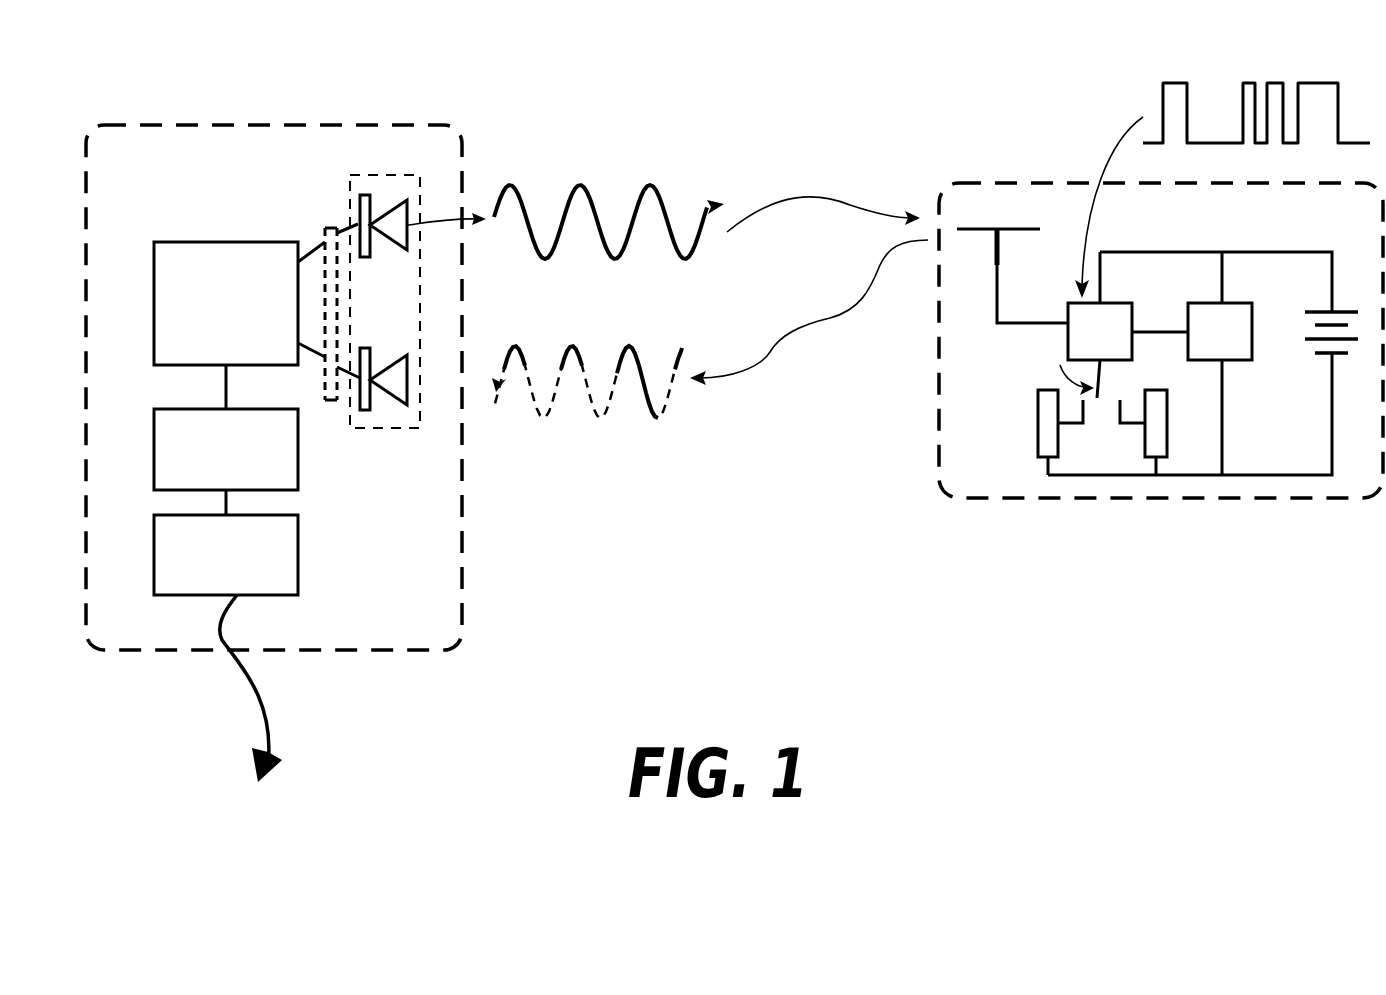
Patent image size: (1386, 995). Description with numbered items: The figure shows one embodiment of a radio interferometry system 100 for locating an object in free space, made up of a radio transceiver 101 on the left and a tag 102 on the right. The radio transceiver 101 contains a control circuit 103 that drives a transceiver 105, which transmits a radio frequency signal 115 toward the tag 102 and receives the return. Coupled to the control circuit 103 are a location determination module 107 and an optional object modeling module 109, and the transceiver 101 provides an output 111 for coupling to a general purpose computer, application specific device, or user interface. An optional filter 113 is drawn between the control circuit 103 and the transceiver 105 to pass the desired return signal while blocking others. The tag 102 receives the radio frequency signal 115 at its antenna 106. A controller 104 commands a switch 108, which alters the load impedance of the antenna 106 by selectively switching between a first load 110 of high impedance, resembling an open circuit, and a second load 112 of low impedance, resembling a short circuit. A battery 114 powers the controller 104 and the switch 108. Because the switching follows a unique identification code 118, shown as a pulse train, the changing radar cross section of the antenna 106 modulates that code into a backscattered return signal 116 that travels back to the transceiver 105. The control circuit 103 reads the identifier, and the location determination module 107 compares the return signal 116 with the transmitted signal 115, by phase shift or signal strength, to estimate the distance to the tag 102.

The radio interferometry system 100 is at (792, 566).
The radio transceiver 101 is at (315, 125).
The tag 102 is at (1047, 183).
The control circuit 103 is at (218, 242).
The controller 104 is at (1230, 338).
The transceiver 105 is at (352, 211).
The antenna 106 is at (1015, 229).
The location determination module 107 is at (154, 452).
The switch 108 is at (1110, 313).
The object modeling module 109 is at (298, 540).
The first load 110 is at (1048, 423).
The output 111 is at (285, 688).
The second load 112 is at (1157, 423).
The filter 113 is at (337, 398).
The battery 114 is at (1307, 312).
The radio frequency signal 115 is at (580, 187).
The backscattered return signal 116 is at (600, 418).
The unique identification code 118 is at (1175, 83).